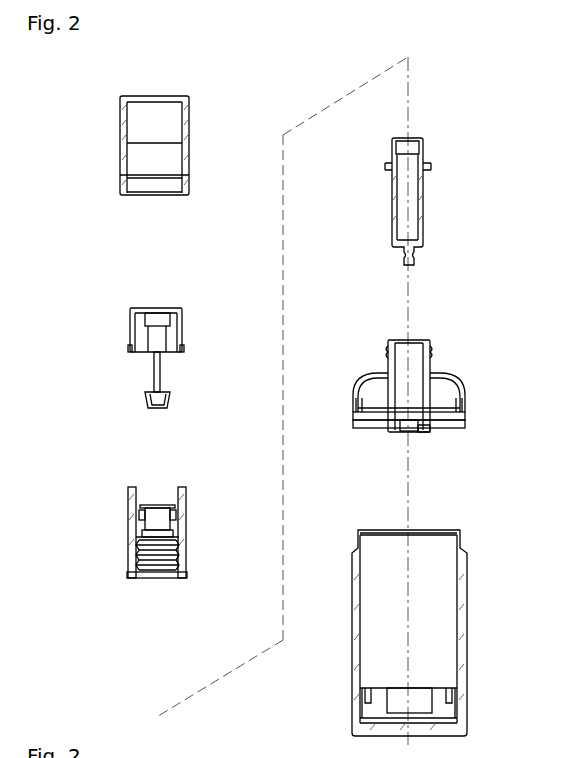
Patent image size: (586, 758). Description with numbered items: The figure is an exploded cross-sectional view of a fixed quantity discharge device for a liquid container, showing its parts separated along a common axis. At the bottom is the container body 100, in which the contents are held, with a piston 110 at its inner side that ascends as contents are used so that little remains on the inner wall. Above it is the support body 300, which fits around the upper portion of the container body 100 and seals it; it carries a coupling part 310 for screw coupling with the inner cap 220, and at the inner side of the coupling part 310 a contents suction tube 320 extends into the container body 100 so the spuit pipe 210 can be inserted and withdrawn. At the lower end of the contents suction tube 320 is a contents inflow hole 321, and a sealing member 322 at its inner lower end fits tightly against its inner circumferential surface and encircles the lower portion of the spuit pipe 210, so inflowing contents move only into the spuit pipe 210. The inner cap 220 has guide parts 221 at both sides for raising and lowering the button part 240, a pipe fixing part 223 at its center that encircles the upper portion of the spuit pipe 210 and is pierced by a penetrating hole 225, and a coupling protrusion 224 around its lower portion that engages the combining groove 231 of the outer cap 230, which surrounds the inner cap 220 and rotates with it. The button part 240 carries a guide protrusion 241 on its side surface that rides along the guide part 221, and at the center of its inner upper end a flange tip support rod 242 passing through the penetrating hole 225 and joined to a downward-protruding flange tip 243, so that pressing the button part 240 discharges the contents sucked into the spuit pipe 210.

The container body 100 is at (462, 633).
The piston 110 is at (452, 700).
The spuit pipe 210 is at (425, 210).
The inner cap 220 is at (145, 497).
The guide part 221 is at (172, 502).
The pipe fixing part 223 is at (173, 513).
The coupling protrusion 224 is at (187, 562).
The penetrating hole 225 is at (155, 511).
The outer cap 230 is at (122, 129).
The combining groove 231 is at (122, 176).
The button part 240 is at (106, 356).
The guide protrusion 241 is at (131, 344).
The flange tip support rod 242 is at (155, 385).
The flange tip 243 is at (146, 402).
The support body 300 is at (456, 383).
The coupling part 310 is at (431, 347).
The contents suction tube 320 is at (466, 413).
The contents inflow hole 321 is at (405, 433).
The sealing member 322 is at (427, 431).